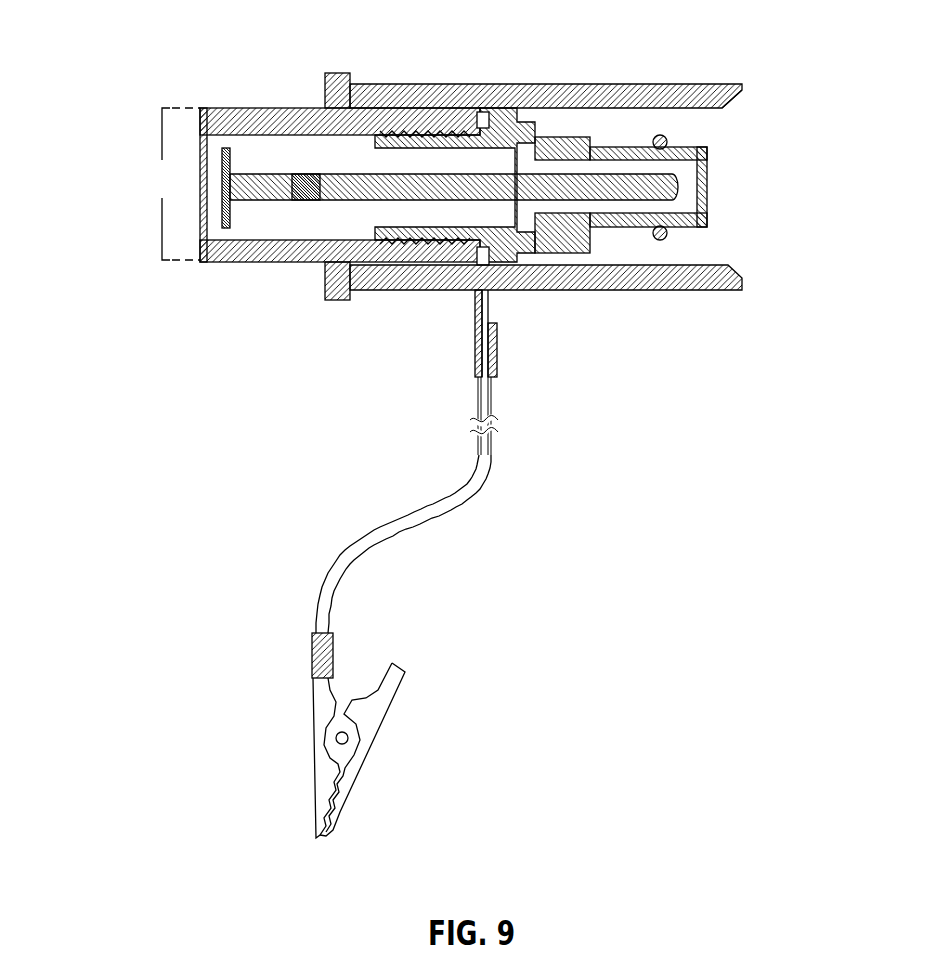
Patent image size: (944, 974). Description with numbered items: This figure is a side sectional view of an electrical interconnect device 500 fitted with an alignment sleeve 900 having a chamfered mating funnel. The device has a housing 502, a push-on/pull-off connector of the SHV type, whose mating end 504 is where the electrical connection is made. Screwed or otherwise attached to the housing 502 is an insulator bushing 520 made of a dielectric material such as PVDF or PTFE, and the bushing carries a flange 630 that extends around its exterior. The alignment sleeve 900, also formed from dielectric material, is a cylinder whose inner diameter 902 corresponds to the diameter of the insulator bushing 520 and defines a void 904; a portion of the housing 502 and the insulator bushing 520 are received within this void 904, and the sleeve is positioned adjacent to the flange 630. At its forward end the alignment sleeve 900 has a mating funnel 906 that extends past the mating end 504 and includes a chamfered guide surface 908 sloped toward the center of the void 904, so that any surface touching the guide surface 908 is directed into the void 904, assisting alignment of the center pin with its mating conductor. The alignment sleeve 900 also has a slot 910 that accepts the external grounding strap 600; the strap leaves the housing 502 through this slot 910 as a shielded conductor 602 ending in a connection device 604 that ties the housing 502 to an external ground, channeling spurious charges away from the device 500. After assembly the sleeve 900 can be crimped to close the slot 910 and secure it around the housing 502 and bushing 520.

The electrical interconnect device 500 is at (183, 82).
The housing 502 is at (570, 230).
The mating end 504 is at (684, 244).
The insulator bushing 520 is at (362, 120).
The external grounding strap 600 is at (448, 564).
The shielded conductor 602 is at (487, 450).
The connection device 604 is at (390, 690).
The flange 630 is at (337, 88).
The alignment sleeve 900 is at (617, 159).
The inner diameter 902 is at (171, 184).
The void 904 is at (712, 245).
The mating funnel 906 is at (745, 92).
The chamfered guide surface 908 is at (722, 108).
The slot 910 is at (490, 327).